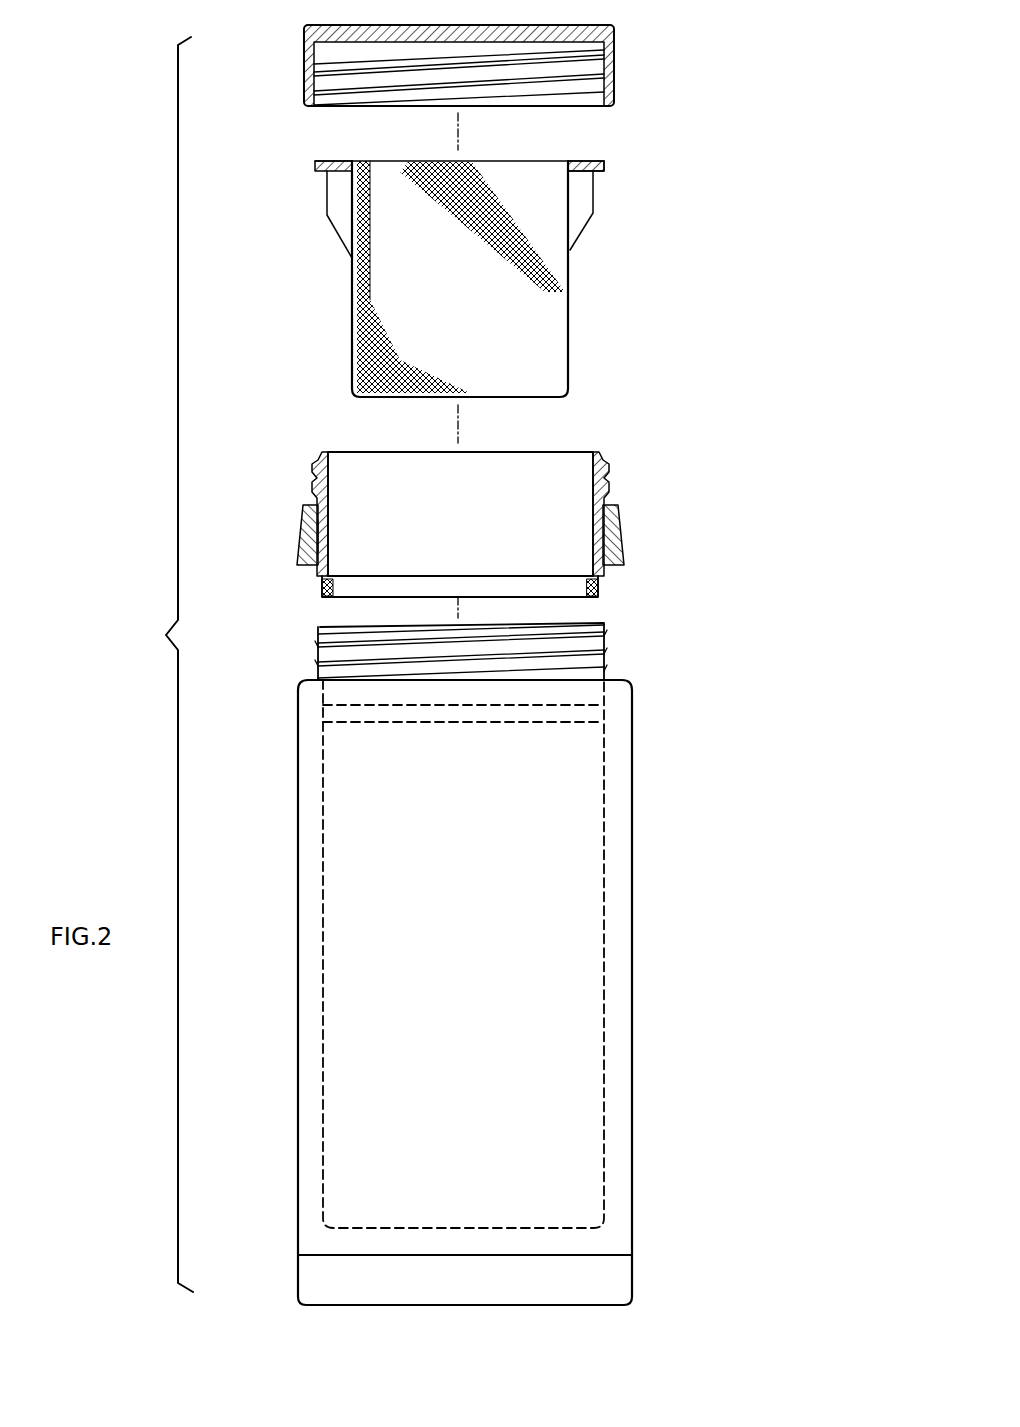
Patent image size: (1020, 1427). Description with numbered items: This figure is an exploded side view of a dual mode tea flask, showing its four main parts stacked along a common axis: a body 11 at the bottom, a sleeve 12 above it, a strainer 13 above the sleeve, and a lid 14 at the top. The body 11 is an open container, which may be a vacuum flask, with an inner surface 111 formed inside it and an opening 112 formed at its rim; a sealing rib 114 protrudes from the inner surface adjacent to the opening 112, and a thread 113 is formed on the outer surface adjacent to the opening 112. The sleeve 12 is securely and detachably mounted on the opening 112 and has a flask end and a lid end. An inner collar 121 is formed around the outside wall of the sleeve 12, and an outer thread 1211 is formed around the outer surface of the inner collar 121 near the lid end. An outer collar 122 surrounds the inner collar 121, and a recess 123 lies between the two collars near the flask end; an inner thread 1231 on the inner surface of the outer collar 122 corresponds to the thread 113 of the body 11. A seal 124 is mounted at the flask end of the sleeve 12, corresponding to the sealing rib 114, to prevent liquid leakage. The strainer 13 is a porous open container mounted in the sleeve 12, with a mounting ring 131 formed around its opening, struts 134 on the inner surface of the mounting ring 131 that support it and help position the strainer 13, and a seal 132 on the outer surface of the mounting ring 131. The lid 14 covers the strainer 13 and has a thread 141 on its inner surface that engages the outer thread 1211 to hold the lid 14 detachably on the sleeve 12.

The body 11 is at (471, 946).
The inner surface 111 is at (600, 1068).
The opening 112 is at (350, 626).
The thread 113 is at (606, 662).
The sealing rib 114 is at (608, 708).
The sleeve 12 is at (465, 500).
The inner collar 121 is at (320, 462).
The outer thread 1211 is at (608, 478).
The outer collar 122 is at (623, 525).
The recess 123 is at (328, 515).
The inner thread 1231 is at (317, 532).
The seal 124 is at (602, 583).
The strainer 13 is at (352, 302).
The mounting ring 131 is at (583, 163).
The seal 132 is at (605, 167).
The struts 134 is at (593, 214).
The lid 14 is at (615, 34).
The thread 141 is at (607, 86).